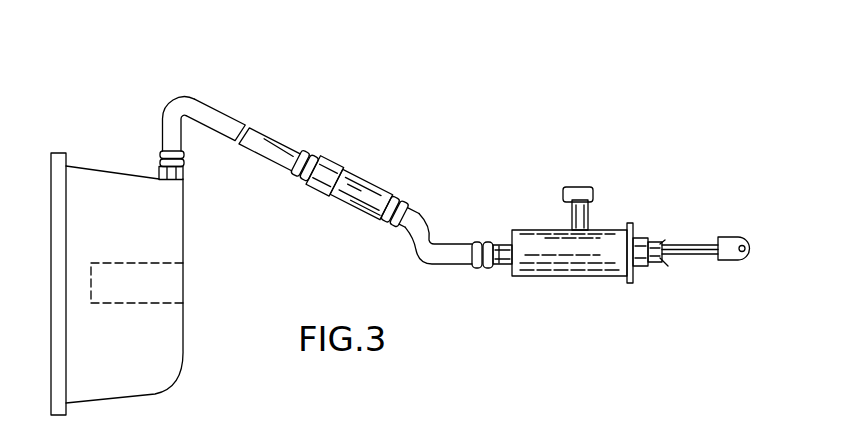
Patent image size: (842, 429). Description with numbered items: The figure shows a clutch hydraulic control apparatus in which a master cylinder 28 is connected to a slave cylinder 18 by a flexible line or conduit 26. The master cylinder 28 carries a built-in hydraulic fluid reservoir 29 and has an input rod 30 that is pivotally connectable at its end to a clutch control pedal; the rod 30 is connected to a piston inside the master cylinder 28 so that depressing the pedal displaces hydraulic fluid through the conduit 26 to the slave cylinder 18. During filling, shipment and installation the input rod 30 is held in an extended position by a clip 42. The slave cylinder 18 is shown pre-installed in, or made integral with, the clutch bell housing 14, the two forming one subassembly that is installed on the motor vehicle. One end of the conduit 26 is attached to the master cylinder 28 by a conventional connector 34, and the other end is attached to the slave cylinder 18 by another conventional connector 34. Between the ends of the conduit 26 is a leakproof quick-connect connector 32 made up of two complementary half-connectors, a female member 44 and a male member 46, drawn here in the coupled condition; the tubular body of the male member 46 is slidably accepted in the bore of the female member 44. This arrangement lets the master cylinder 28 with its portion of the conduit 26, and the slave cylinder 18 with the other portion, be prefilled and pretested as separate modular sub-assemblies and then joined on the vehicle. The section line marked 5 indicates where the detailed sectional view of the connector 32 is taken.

The bell housing 14 is at (132, 135).
The slave cylinder 18 is at (148, 306).
The conduit 26 is at (221, 98).
The connector 34 is at (188, 174).
The male half-connector 46 is at (312, 192).
The leakproof quick-connect connector 32 is at (338, 153).
The female half-connector 44 is at (368, 222).
The master cylinder 28 is at (612, 281).
The hydraulic fluid reservoir 29 is at (586, 190).
The clip 42 is at (665, 240).
The input rod 30 is at (700, 257).
The section line for FIG. 5 is at (268, 140).